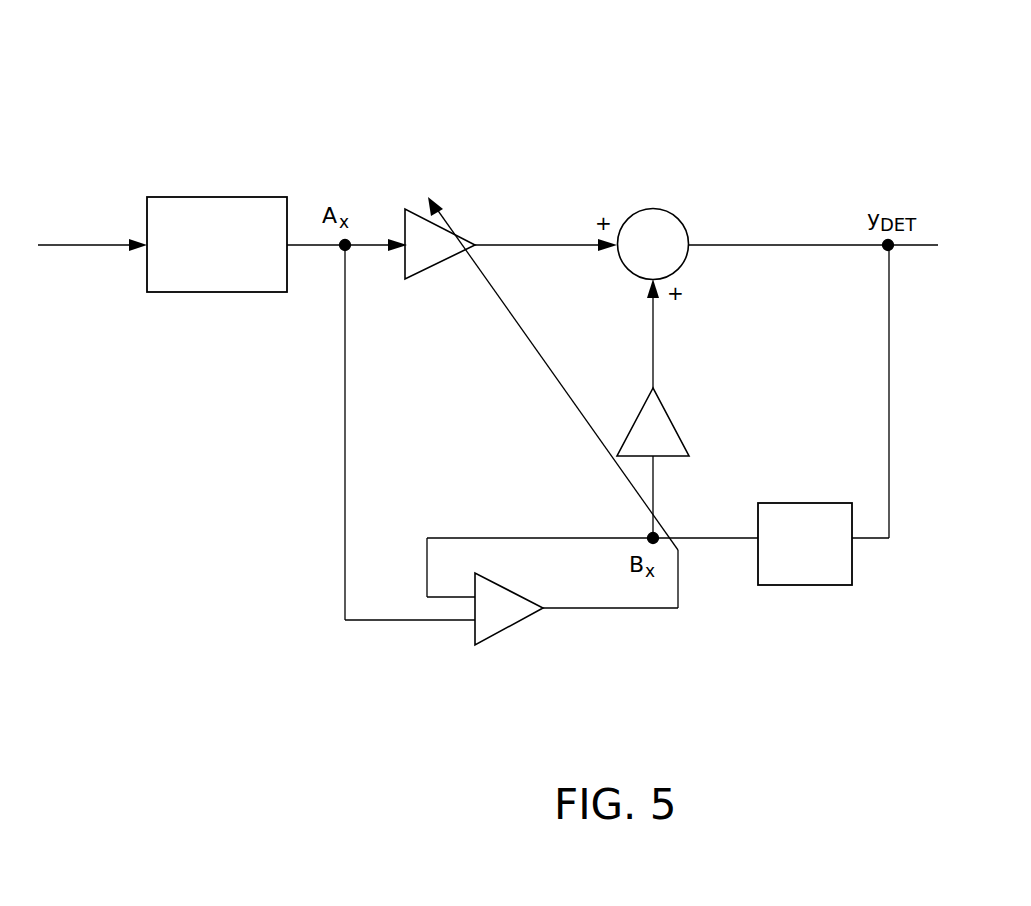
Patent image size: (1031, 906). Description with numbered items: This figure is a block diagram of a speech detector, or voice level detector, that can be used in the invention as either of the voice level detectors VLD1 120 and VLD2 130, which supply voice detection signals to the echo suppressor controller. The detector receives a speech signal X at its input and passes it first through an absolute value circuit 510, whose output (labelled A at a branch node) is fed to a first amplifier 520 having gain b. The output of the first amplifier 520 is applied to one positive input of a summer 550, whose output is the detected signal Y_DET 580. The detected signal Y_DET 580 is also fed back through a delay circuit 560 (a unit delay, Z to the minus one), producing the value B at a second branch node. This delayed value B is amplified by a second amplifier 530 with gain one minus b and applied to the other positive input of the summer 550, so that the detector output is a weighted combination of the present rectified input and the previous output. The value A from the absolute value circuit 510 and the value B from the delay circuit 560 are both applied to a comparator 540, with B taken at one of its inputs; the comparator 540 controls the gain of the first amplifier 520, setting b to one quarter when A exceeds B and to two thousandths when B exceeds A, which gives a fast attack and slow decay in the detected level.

The voice level detector VLD1 120 is at (906, 80).
The voice level detector VLD2 130 is at (816, 112).
The absolute value circuit 510 is at (205, 197).
The first amplifier 520 is at (463, 242).
The second amplifier 530 is at (672, 417).
The comparator 540 is at (507, 627).
The summer 550 is at (683, 218).
The delay circuit 560 is at (792, 503).
The detected signal Y_DET 580 is at (922, 243).